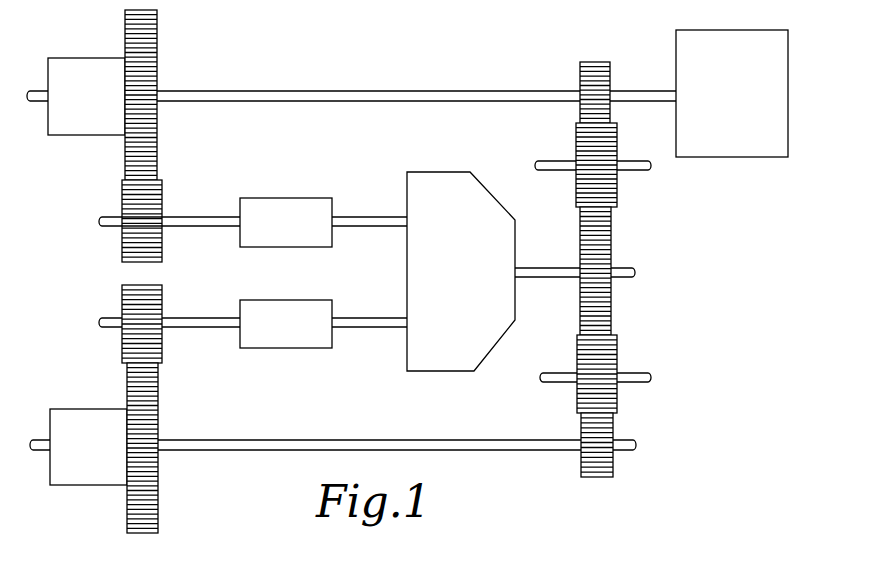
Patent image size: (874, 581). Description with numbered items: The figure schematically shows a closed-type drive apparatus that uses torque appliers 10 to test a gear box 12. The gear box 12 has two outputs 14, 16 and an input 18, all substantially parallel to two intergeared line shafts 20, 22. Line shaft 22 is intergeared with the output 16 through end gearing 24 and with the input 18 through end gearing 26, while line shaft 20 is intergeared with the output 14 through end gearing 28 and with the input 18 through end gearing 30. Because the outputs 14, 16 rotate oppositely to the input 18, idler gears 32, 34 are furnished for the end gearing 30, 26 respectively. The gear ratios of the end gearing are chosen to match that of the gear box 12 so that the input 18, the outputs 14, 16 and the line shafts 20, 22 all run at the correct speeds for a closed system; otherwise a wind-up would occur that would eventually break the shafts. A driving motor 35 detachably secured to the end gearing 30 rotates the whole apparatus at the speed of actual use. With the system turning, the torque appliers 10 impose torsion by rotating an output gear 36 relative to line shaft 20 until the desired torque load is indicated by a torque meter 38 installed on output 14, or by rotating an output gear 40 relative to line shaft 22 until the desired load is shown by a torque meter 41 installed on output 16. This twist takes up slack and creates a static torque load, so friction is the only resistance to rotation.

The torque applier 10 is at (72, 51).
The gear box 12 is at (451, 164).
The output 14 is at (376, 217).
The output 16 is at (370, 322).
The input 18 is at (553, 272).
The line shaft 20 is at (296, 99).
The line shaft 22 is at (490, 440).
The end gearing 24 is at (162, 412).
The end gearing 26 is at (620, 348).
The end gearing 28 is at (160, 68).
The end gearing 30 is at (614, 220).
The idler gear 32 is at (610, 140).
The idler gear 34 is at (614, 408).
The driving motor 35 is at (746, 148).
The output member or gear 36 is at (154, 166).
The torque gauge or meter 38 is at (300, 198).
The output member or gear 40 is at (159, 494).
The torque gauge or meter 41 is at (298, 348).